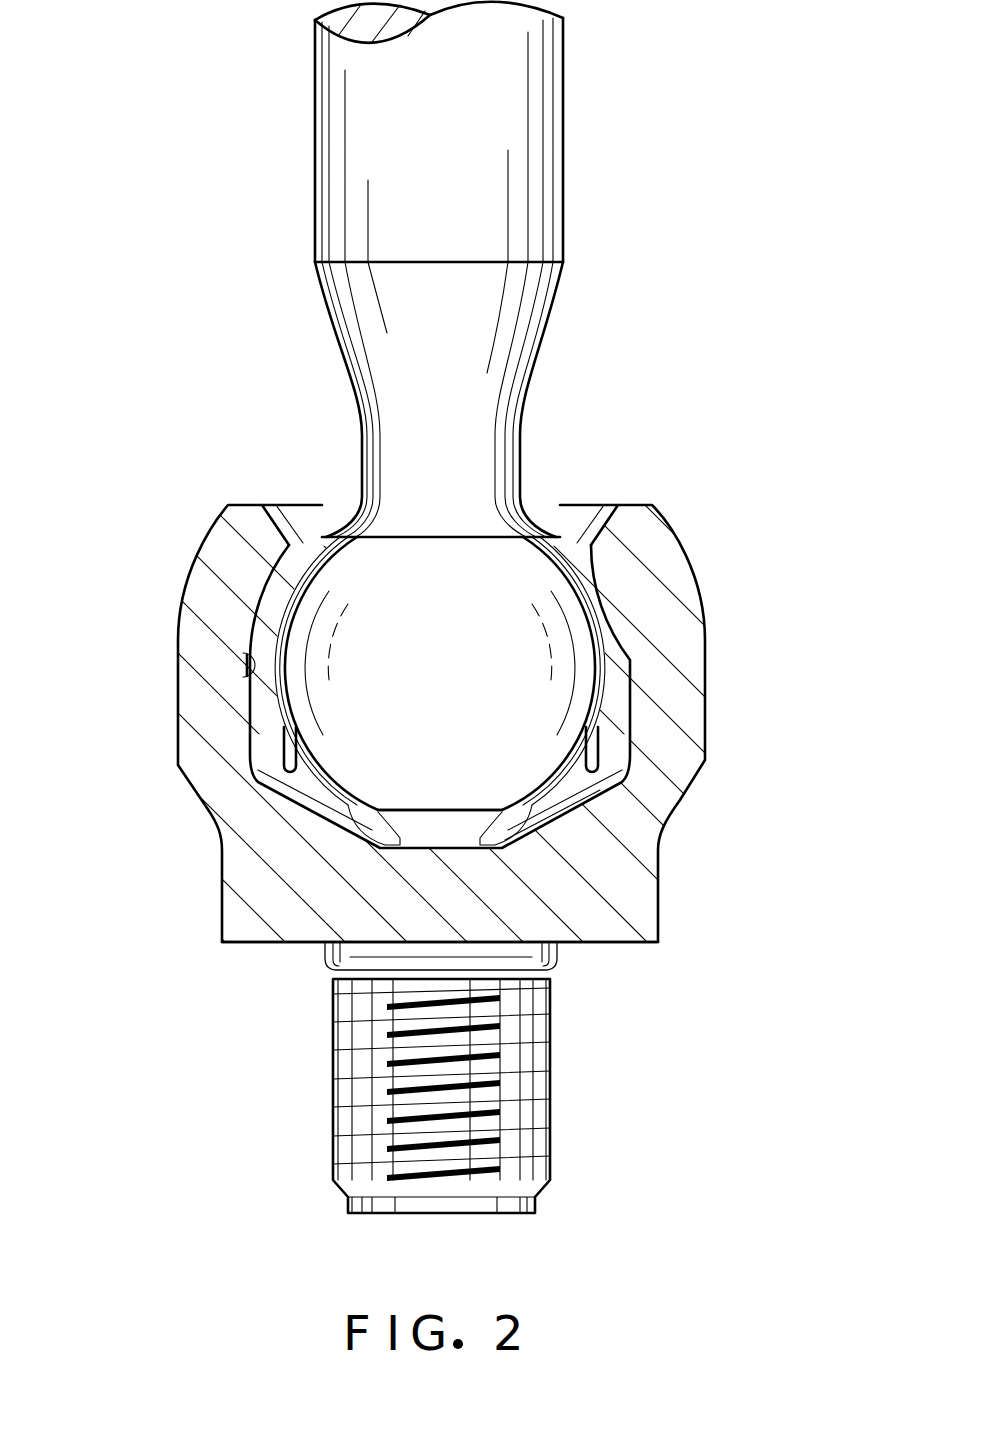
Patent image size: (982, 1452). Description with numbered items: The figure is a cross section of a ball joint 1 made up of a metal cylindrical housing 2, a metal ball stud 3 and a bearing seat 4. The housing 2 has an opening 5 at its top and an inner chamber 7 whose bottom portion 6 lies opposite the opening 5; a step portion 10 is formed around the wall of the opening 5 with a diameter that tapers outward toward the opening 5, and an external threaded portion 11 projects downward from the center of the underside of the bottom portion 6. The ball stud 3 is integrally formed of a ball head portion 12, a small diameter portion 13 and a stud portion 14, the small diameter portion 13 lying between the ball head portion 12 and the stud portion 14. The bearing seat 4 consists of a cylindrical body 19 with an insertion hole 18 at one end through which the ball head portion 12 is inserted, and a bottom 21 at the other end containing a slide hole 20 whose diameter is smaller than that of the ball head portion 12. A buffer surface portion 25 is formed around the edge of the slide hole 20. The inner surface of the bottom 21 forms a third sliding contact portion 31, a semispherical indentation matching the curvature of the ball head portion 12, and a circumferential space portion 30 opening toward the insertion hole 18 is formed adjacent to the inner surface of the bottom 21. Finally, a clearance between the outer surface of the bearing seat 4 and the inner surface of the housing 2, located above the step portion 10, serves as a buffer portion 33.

The ball joint 1 is at (664, 250).
The housing 2 is at (660, 915).
The ball stud 3 is at (566, 122).
The bearing seat 4 is at (617, 705).
The opening 5 is at (593, 540).
The bottom portion 6 is at (533, 900).
The inner chamber 7 is at (416, 833).
The step portion 10 is at (255, 660).
The external threaded portion 11 is at (527, 1107).
The ball head portion 12 is at (338, 590).
The small diameter portion 13 is at (482, 433).
The stud portion 14 is at (325, 178).
The insertion hole 18 is at (325, 537).
The cylindrical body 19 is at (617, 622).
The slide hole 20 is at (380, 838).
The bottom 21 is at (338, 802).
The buffer surface portion 25 is at (480, 838).
The space portion 30 is at (633, 773).
The third sliding contact portion 31 is at (560, 772).
The buffer portion 33 is at (250, 632).